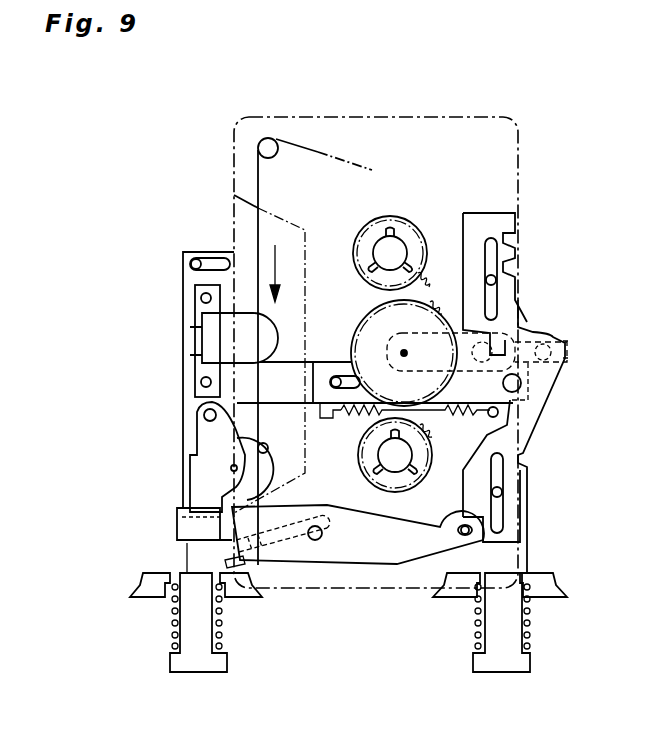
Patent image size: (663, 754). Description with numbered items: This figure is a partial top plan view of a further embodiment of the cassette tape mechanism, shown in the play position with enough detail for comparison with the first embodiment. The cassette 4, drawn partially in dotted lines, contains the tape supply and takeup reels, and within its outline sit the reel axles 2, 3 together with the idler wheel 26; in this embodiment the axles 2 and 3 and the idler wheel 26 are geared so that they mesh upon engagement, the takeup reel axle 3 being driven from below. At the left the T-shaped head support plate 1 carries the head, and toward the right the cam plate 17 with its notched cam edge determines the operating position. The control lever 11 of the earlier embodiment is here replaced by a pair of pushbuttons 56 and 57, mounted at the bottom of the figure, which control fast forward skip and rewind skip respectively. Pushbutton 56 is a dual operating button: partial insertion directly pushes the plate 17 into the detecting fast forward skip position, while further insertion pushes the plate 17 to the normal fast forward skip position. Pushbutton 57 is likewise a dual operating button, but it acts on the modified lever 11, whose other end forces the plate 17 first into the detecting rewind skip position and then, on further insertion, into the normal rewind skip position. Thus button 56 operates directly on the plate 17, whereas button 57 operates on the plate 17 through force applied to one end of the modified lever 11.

The T-shaped head support plate 1 is at (185, 382).
The axle 2 is at (405, 228).
The takeup reel axle 3 is at (360, 458).
The cassette 4 is at (356, 117).
The control lever 11 is at (352, 560).
The cam plate 17 is at (540, 397).
The idler wheel 26 is at (364, 336).
The pushbutton 56 is at (497, 675).
The pushbutton 57 is at (195, 675).